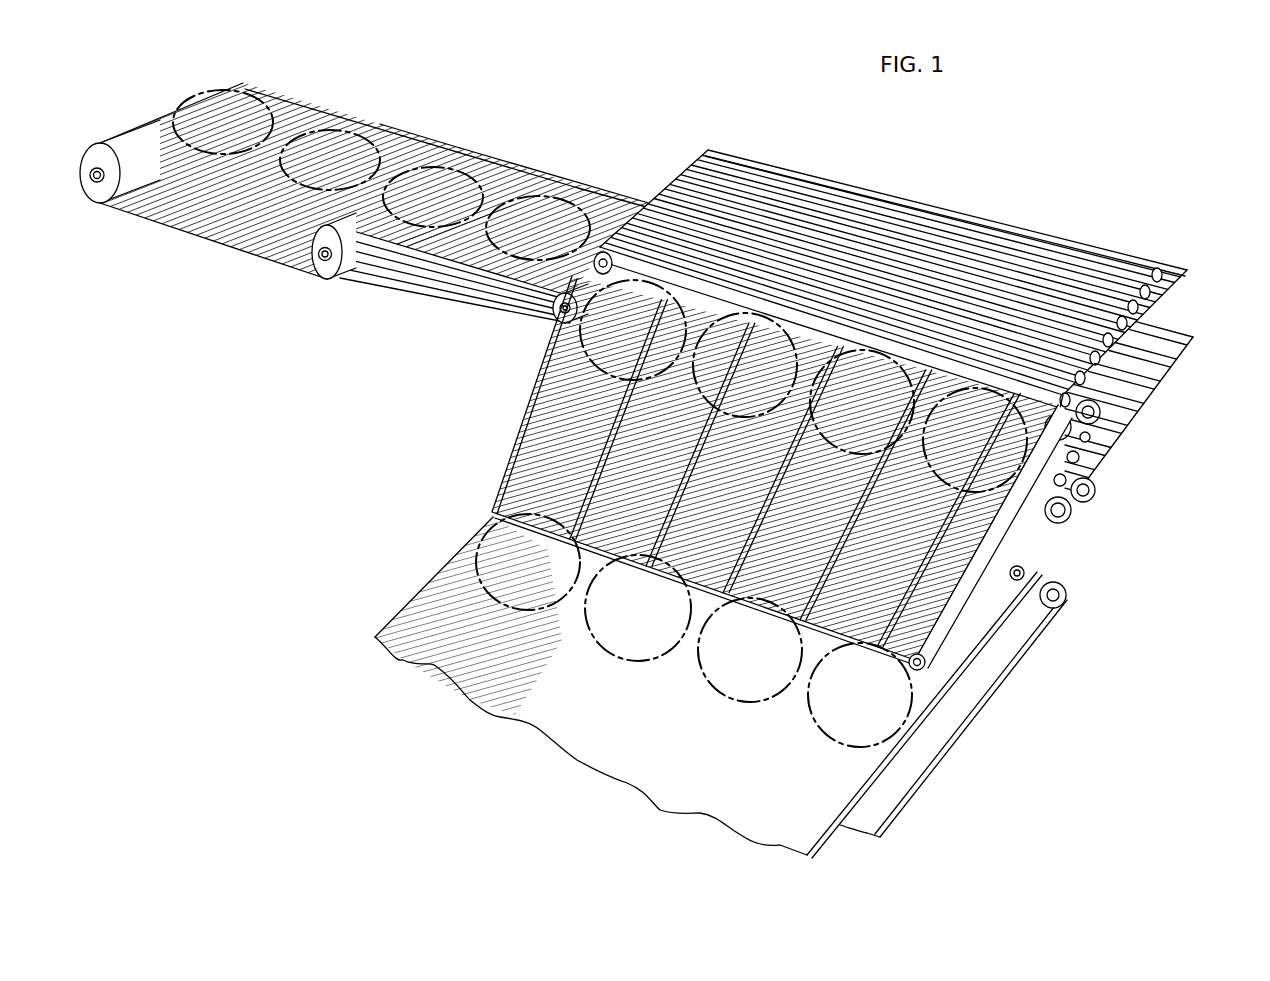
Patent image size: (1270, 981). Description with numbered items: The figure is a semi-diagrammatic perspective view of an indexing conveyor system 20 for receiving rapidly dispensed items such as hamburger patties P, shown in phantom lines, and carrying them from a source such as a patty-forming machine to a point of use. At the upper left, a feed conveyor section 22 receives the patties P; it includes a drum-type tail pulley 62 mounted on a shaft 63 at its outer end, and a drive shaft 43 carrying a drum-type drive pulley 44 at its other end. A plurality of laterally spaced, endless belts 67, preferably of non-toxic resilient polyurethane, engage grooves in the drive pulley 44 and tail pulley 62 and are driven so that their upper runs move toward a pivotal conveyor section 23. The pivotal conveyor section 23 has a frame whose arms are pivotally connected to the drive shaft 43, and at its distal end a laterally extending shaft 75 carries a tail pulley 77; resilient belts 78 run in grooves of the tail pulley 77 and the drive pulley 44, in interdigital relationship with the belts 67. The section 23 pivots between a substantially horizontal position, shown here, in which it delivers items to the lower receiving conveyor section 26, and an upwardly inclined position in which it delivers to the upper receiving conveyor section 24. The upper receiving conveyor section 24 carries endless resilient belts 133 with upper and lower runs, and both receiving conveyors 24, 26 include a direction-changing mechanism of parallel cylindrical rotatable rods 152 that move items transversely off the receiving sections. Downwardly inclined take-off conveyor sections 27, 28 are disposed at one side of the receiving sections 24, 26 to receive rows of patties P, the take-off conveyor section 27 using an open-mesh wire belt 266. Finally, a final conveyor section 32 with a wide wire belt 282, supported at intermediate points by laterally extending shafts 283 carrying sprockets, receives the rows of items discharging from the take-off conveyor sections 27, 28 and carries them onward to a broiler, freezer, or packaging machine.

The indexing conveyor system 20 is at (1112, 153).
The feed conveyor section 22 is at (222, 233).
The pivotal conveyor section 23 is at (427, 303).
The upper receiving conveyor section 24 is at (1195, 267).
The lower receiving conveyor section 26 is at (1195, 347).
The take-off conveyor section 27 is at (532, 413).
The take-off conveyor section 28 is at (1057, 547).
The final conveyor section 32 is at (1007, 683).
The drive shaft 43 is at (317, 262).
The drive pulley 44 is at (336, 273).
The tail pulley 62 is at (103, 199).
The shaft 63 is at (90, 178).
The belts 67 is at (422, 132).
The shaft 75 is at (558, 312).
The tail pulley 77 is at (557, 324).
The belts 78 is at (573, 173).
The belts 133 is at (795, 168).
The rods 152 is at (970, 232).
The wire belt 266 is at (781, 510).
The wire belt 282 is at (527, 692).
The shafts 283 is at (1066, 596).
The hamburger patties P is at (338, 130).